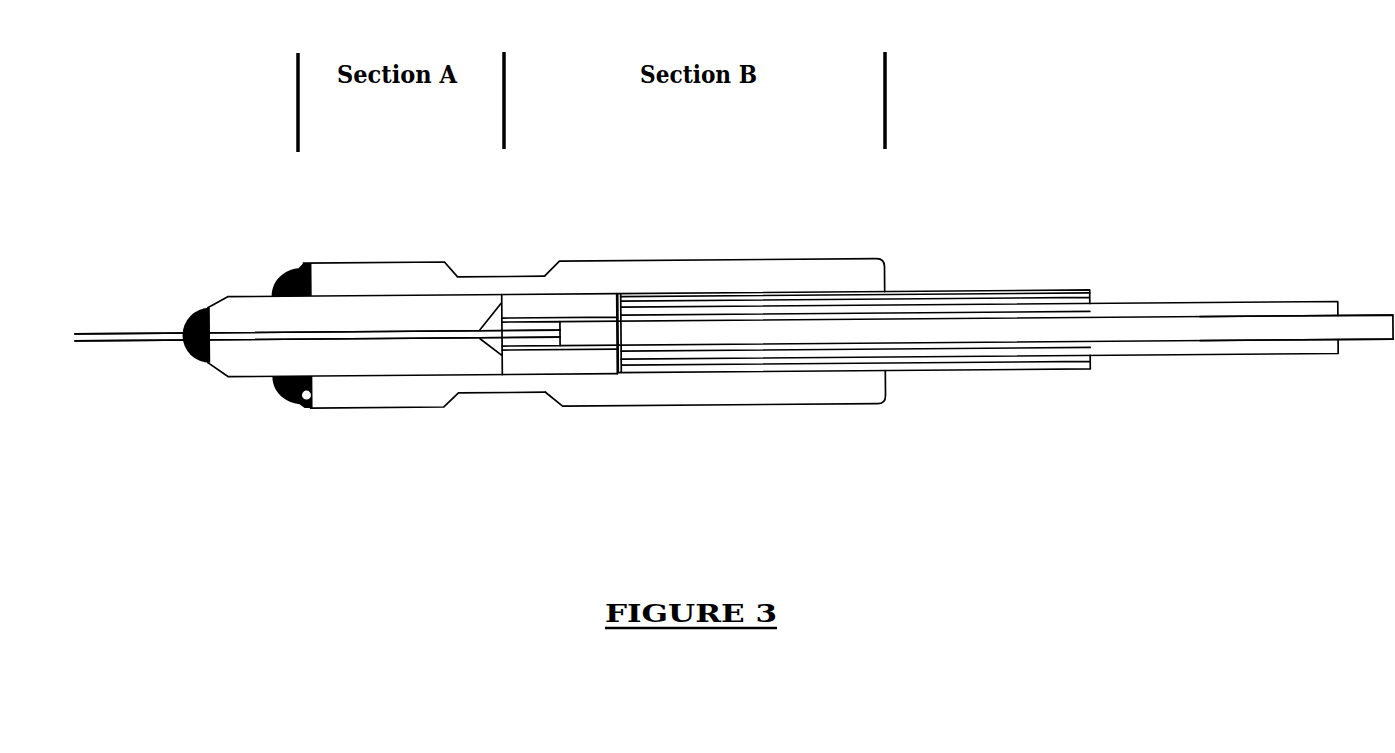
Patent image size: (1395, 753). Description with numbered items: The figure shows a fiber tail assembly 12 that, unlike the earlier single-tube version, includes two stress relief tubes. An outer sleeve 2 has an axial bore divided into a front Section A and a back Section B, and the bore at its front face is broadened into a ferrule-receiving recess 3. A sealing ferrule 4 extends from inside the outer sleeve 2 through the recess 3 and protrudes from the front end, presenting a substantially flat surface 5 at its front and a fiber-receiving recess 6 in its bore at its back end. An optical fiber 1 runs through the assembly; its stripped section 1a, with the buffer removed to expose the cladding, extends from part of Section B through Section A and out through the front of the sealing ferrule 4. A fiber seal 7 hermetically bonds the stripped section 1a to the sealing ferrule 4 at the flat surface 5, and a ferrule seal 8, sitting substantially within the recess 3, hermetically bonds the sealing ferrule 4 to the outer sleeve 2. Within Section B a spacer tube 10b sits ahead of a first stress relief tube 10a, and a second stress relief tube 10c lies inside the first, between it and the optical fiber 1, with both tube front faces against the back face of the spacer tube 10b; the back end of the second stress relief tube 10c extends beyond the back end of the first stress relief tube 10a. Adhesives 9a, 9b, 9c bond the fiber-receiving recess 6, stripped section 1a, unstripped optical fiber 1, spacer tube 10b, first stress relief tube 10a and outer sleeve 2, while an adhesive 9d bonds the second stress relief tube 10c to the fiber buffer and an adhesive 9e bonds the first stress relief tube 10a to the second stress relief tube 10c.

The optical fiber 1 is at (1370, 334).
The stripped section 1a is at (160, 338).
The outer sleeve 2 is at (570, 389).
The ferrule-receiving recess 3 is at (313, 404).
The sealing ferrule 4 is at (257, 354).
The flat surface 5 is at (207, 303).
The fiber-receiving recess 6 is at (500, 356).
The fiber seal 7 is at (193, 311).
The ferrule seal 8 is at (277, 274).
The adhesive 9a is at (517, 322).
The adhesive 9b is at (600, 294).
The adhesive 9c is at (862, 294).
The adhesive 9d is at (1253, 320).
The adhesive 9e is at (1030, 302).
The first stress relief tube 10a is at (917, 300).
The spacer tube 10b is at (598, 354).
The second stress relief tube 10c is at (1130, 312).
The fiber tail assembly 12 is at (1286, 31).